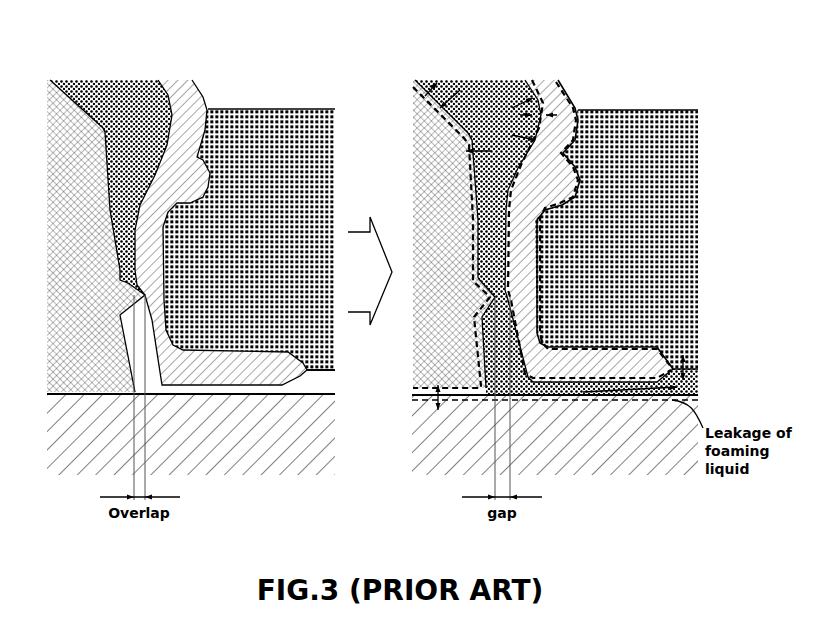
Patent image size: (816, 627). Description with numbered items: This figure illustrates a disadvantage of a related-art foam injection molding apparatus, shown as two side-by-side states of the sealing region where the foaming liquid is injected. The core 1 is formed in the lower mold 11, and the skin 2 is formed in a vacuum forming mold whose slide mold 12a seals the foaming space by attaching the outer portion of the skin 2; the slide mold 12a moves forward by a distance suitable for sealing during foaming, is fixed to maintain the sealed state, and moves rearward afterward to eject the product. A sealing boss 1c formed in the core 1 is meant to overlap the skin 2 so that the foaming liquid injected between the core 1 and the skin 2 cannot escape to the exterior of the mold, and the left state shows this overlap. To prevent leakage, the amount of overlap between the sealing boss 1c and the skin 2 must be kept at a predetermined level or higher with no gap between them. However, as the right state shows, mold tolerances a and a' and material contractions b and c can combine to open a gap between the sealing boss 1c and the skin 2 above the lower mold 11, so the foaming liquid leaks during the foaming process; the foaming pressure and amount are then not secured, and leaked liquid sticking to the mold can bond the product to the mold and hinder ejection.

The core 1 is at (82, 110).
The sealing boss 1c is at (124, 283).
The skin 2 is at (200, 90).
The slide mold 12a is at (272, 120).
The lower mold 11 is at (262, 452).
The mold tolerance a is at (537, 413).
The mold tolerance a' is at (704, 360).
The contraction of material b is at (556, 96).
The contraction of material c is at (412, 90).